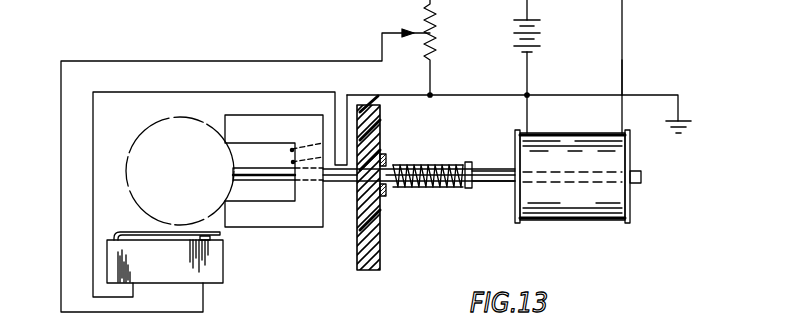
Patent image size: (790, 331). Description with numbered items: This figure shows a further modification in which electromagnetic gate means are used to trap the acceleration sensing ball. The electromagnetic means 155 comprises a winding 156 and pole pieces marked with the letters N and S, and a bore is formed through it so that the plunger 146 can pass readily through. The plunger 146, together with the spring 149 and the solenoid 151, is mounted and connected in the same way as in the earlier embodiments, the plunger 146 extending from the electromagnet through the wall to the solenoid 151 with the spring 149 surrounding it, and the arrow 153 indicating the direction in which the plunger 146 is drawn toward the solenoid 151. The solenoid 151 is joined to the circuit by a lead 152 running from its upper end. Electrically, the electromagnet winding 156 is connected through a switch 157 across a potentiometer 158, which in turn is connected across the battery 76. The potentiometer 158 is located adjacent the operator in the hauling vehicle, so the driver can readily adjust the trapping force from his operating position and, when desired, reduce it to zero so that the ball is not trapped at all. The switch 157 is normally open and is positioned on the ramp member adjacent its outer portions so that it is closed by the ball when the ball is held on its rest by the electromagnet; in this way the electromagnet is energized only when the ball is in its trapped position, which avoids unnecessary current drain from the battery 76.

The battery 76 is at (538, 50).
The plunger 146 is at (642, 177).
The spring 149 is at (401, 186).
The solenoid 151 is at (559, 207).
The solenoid lead wire 152 is at (571, 0).
The shaft motion direction 153 is at (503, 142).
The electromagnetic means 155 is at (275, 122).
The winding 156 is at (291, 151).
The switch 157 is at (213, 265).
The potentiometer 158 is at (395, 33).